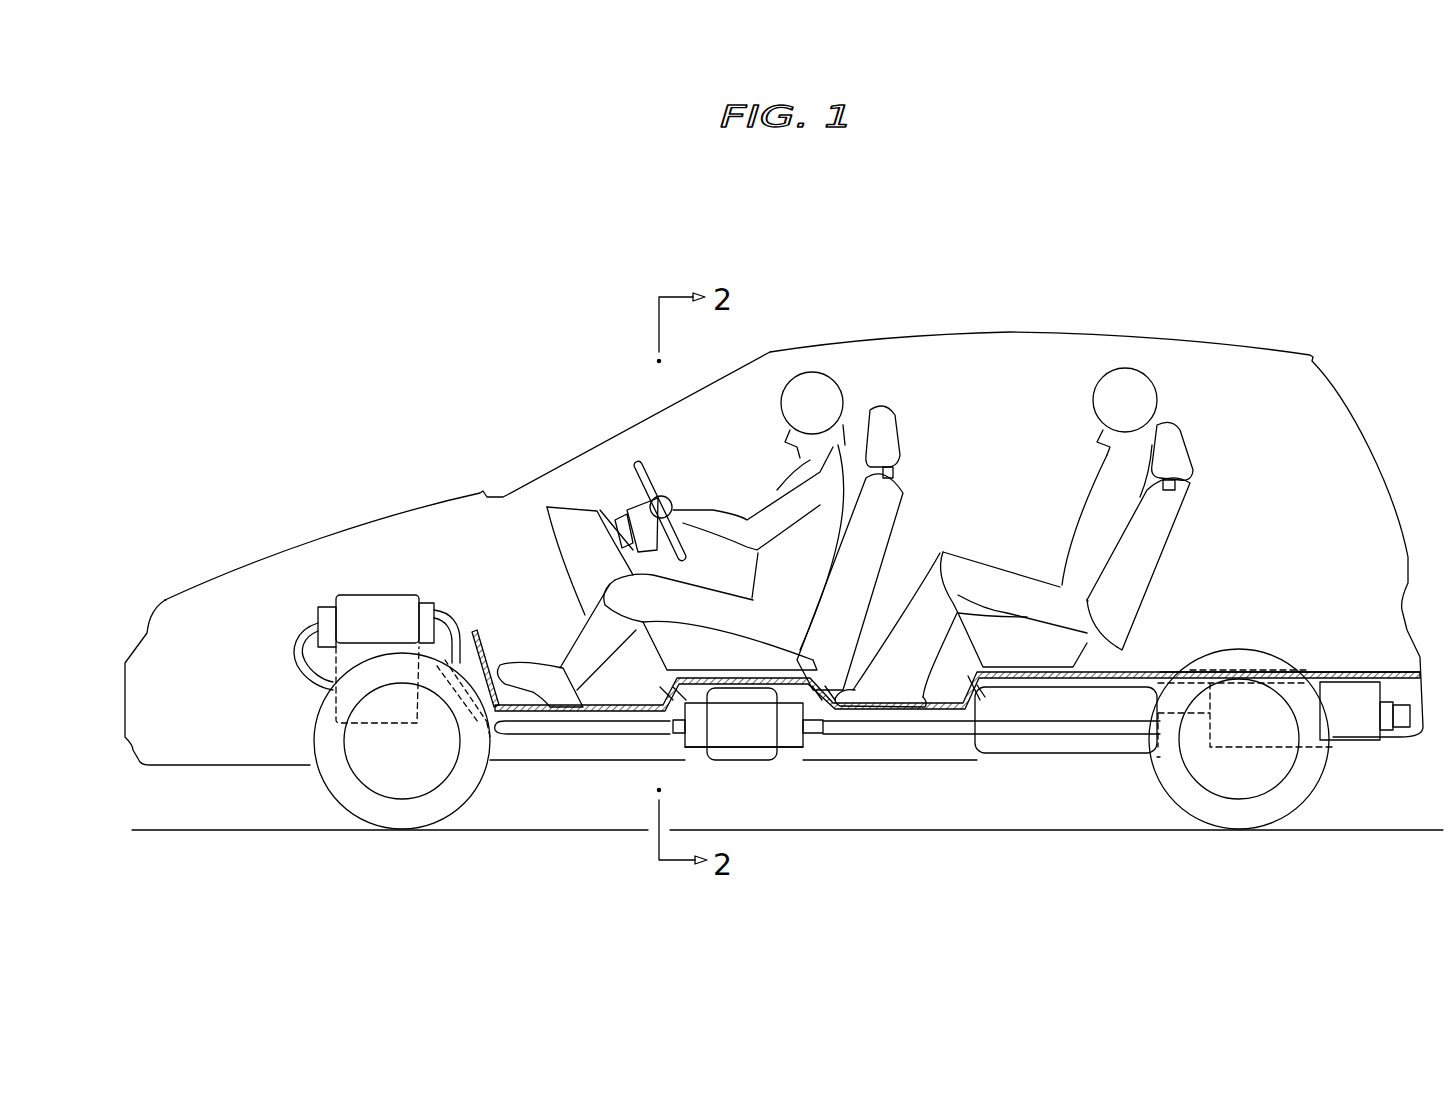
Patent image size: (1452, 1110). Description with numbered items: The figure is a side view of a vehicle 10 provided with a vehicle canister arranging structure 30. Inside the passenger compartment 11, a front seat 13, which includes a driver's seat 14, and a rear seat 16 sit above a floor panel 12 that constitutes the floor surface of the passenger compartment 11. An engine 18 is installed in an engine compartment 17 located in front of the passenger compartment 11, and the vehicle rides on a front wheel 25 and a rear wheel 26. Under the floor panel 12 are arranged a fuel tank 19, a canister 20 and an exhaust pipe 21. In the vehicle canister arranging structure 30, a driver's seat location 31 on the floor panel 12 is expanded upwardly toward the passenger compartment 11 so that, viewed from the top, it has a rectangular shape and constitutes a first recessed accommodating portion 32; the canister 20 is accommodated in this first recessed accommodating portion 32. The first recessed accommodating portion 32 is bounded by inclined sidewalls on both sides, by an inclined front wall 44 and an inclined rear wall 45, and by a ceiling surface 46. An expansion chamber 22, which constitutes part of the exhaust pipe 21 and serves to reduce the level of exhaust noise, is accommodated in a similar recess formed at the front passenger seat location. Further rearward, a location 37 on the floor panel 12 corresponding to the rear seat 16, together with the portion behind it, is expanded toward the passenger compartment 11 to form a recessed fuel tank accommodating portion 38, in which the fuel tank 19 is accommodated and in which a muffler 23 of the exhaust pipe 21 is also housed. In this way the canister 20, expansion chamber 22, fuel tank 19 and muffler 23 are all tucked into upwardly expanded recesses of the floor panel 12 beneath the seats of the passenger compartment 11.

The vehicle 10 is at (952, 317).
The passenger compartment 11 is at (1037, 363).
The floor panel 12 is at (597, 660).
The front seat 13 is at (888, 398).
The driver's seat 14 is at (885, 513).
The rear seat 16 is at (1173, 503).
The engine compartment 17 is at (463, 530).
The engine 18 is at (362, 605).
The fuel tank 19 is at (1083, 745).
The canister 20 is at (748, 762).
The exhaust pipe 21 is at (927, 744).
The expansion chamber 22 is at (795, 762).
The muffler 23 is at (1365, 735).
The front wheel 25 is at (372, 805).
The rear wheel 26 is at (1290, 808).
The vehicle canister arranging structure 30 is at (623, 787).
The driver's seat location 31 is at (717, 675).
The first recessed accommodating portion 32 is at (822, 665).
The location corresponding to the rear seat 37 is at (1088, 633).
The recessed fuel tank accommodating portion 38 is at (1168, 672).
The inclined front wall 44 is at (613, 700).
The inclined rear wall 45 is at (875, 708).
The ceiling surface 46 is at (762, 672).